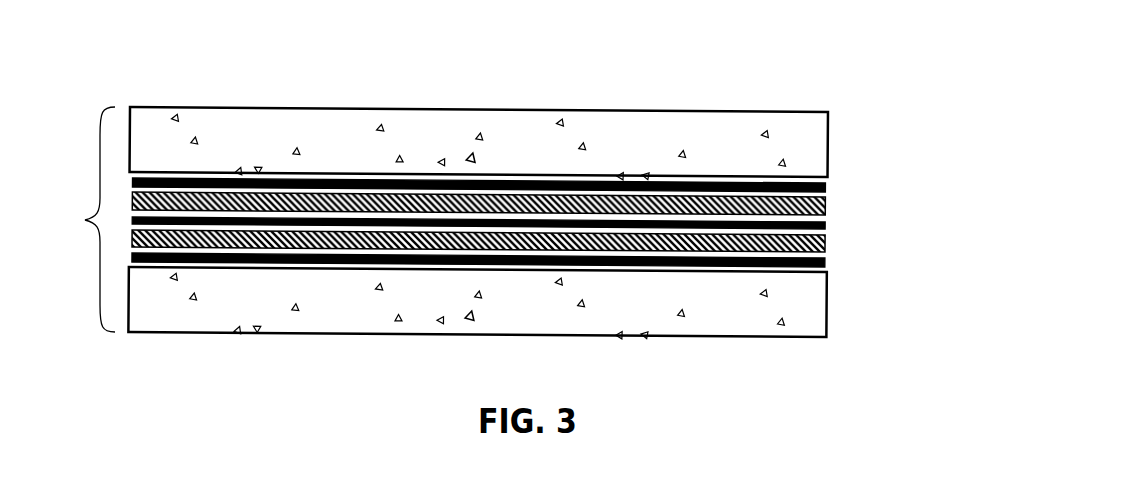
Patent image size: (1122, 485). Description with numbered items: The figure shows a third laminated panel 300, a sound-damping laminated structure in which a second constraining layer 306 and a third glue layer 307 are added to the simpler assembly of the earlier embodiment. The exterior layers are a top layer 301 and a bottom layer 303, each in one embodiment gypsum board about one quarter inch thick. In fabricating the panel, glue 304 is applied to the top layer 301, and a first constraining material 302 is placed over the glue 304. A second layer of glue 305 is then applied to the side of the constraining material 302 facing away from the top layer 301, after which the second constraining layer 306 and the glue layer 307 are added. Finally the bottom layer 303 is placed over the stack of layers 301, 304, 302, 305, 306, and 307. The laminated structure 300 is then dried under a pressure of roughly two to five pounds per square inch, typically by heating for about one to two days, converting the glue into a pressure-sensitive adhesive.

The third laminated panel 300 is at (538, 227).
The top layer 301 is at (665, 147).
The first constraining material 302 is at (830, 205).
The bottom layer 303 is at (682, 312).
The glue 304 is at (832, 185).
The second layer of glue 305 is at (830, 226).
The second constraining layer 306 is at (830, 244).
The third glue layer 307 is at (831, 262).